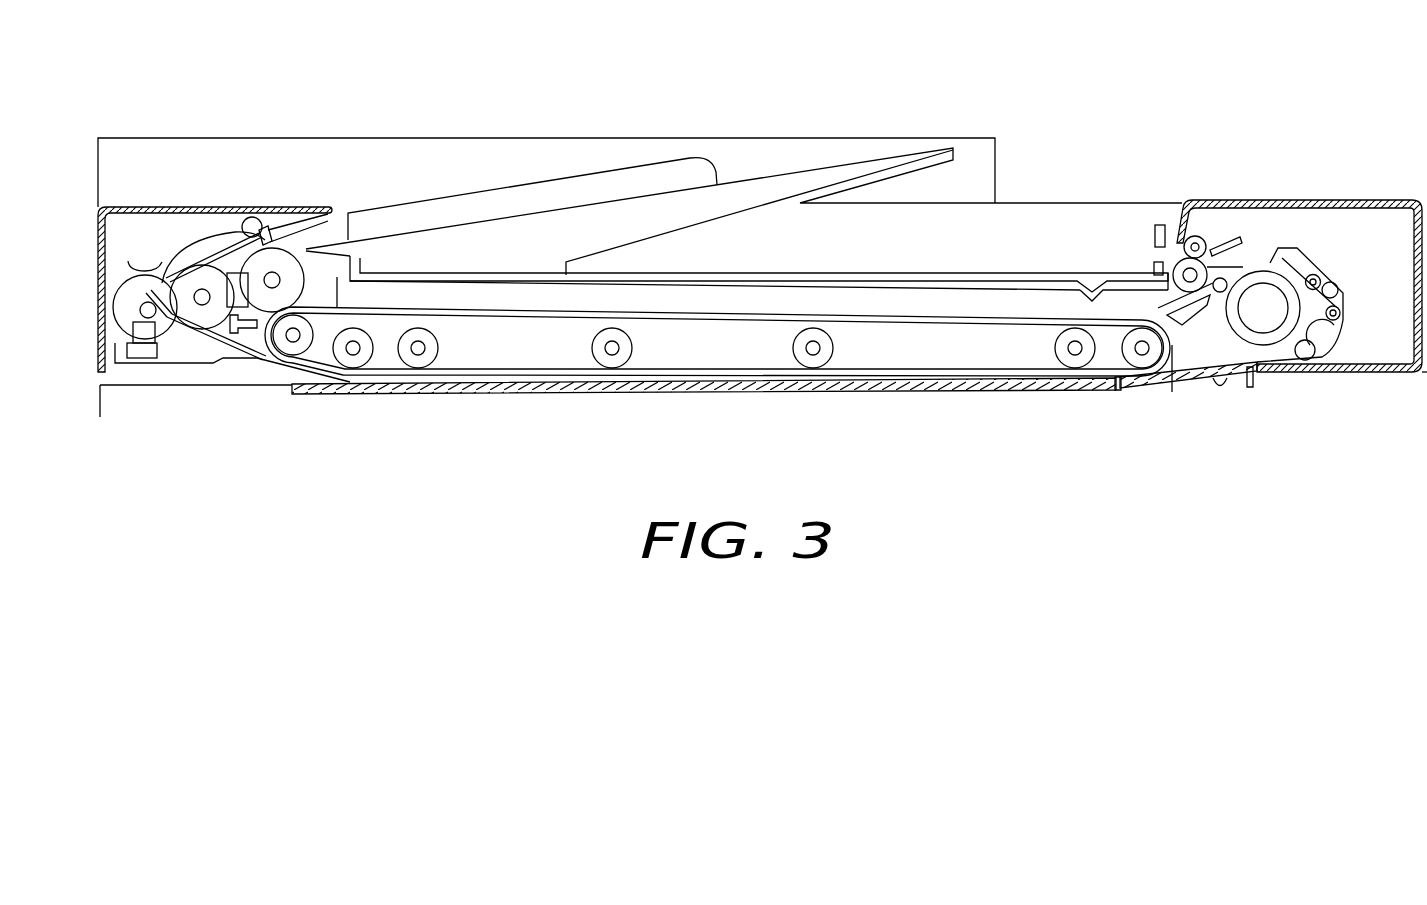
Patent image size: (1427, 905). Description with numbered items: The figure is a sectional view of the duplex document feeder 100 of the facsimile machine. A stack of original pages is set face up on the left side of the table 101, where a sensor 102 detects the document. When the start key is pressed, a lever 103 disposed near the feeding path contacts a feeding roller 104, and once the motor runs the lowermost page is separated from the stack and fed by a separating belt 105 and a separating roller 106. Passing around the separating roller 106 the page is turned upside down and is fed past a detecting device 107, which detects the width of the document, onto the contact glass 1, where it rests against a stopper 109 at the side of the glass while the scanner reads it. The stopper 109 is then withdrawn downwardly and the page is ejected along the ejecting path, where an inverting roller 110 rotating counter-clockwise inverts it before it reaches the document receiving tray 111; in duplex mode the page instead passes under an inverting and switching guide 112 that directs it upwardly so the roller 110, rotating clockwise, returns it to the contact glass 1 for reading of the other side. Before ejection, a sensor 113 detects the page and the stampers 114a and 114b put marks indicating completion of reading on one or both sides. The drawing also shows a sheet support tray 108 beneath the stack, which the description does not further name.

The contact glass 1 is at (783, 393).
The duplex document feeder 100 is at (986, 109).
The table 101 is at (823, 170).
The sensor 102 is at (232, 273).
The lever 103 is at (200, 233).
The feeding roller 104 is at (290, 250).
The separating belt 105 is at (188, 266).
The separating roller 106 is at (197, 322).
The detecting device 107 is at (237, 333).
The sheet tray 108 is at (797, 277).
The stopper 109 is at (1212, 382).
The inverting roller 110 is at (1267, 276).
The document receiving tray 111 is at (1015, 278).
The inverting and switching guide 112 is at (1180, 338).
The sensor 113 is at (1378, 288).
The stamper 114a is at (1152, 268).
The stamper 114b is at (1162, 225).